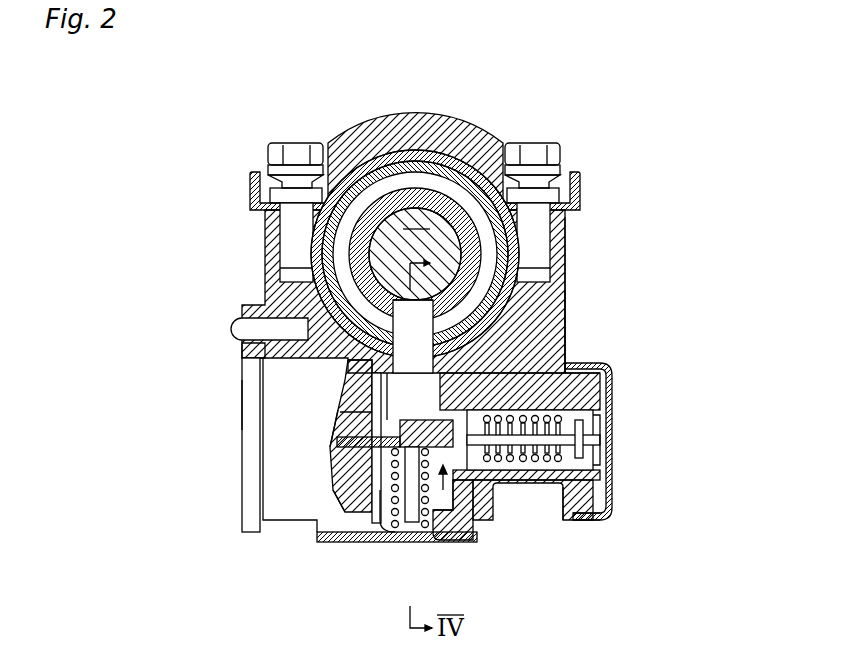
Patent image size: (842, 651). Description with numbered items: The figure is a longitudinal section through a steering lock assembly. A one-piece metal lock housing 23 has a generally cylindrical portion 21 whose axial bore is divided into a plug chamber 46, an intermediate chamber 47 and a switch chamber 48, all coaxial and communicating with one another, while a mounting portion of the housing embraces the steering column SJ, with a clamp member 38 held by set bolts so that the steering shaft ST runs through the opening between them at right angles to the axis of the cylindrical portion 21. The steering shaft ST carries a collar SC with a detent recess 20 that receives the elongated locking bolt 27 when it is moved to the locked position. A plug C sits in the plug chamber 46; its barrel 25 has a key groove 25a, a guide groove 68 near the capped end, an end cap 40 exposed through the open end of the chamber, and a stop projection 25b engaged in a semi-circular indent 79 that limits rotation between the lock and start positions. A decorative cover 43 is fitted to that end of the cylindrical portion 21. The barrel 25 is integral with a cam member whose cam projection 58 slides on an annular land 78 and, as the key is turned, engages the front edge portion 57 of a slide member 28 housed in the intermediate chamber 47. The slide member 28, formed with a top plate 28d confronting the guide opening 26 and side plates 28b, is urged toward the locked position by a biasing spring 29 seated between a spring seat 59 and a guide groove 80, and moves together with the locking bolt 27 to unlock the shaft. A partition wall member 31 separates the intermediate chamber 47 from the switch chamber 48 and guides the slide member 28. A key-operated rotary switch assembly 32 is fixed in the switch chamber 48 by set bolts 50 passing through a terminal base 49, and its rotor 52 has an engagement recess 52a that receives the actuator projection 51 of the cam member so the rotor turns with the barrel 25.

The detent recess 20 is at (565, 232).
The cylindrical portion 21 is at (565, 518).
The lock housing 23 is at (572, 272).
The barrel 25 is at (606, 496).
The key groove 25a is at (590, 440).
The stop projection 25b is at (550, 486).
The guide opening 26 is at (565, 300).
The locking bolt 27 is at (395, 315).
The slide member 28 is at (478, 522).
The side plate 28b is at (358, 398).
The top plate 28d is at (242, 348).
The biasing spring 29 is at (468, 512).
The partition wall member 31 is at (376, 530).
The rotary switch assembly 32 is at (295, 497).
The clamp member 38 is at (421, 206).
The end cap 40 is at (610, 452).
The decorative cover 43 is at (565, 383).
The plug chamber 46 is at (598, 383).
The intermediate chamber 47 is at (413, 508).
The switch chamber 48 is at (252, 378).
The terminal base 49 is at (240, 403).
The set bolts 50 is at (234, 333).
The actuator projection 51 is at (335, 462).
The rotor 52 is at (352, 500).
The engagement recess 52a is at (318, 492).
The front edge portion 57 is at (345, 440).
The cam projection 58 is at (563, 360).
The spring seat 59 is at (443, 492).
The guide groove 68 is at (596, 488).
The annular land 78 is at (582, 372).
The semi-circular indent 79 is at (508, 482).
The guide groove 80 is at (397, 508).
The collar SC is at (366, 195).
The steering column SJ is at (392, 166).
The steering shaft ST is at (457, 152).
The plug C is at (617, 421).